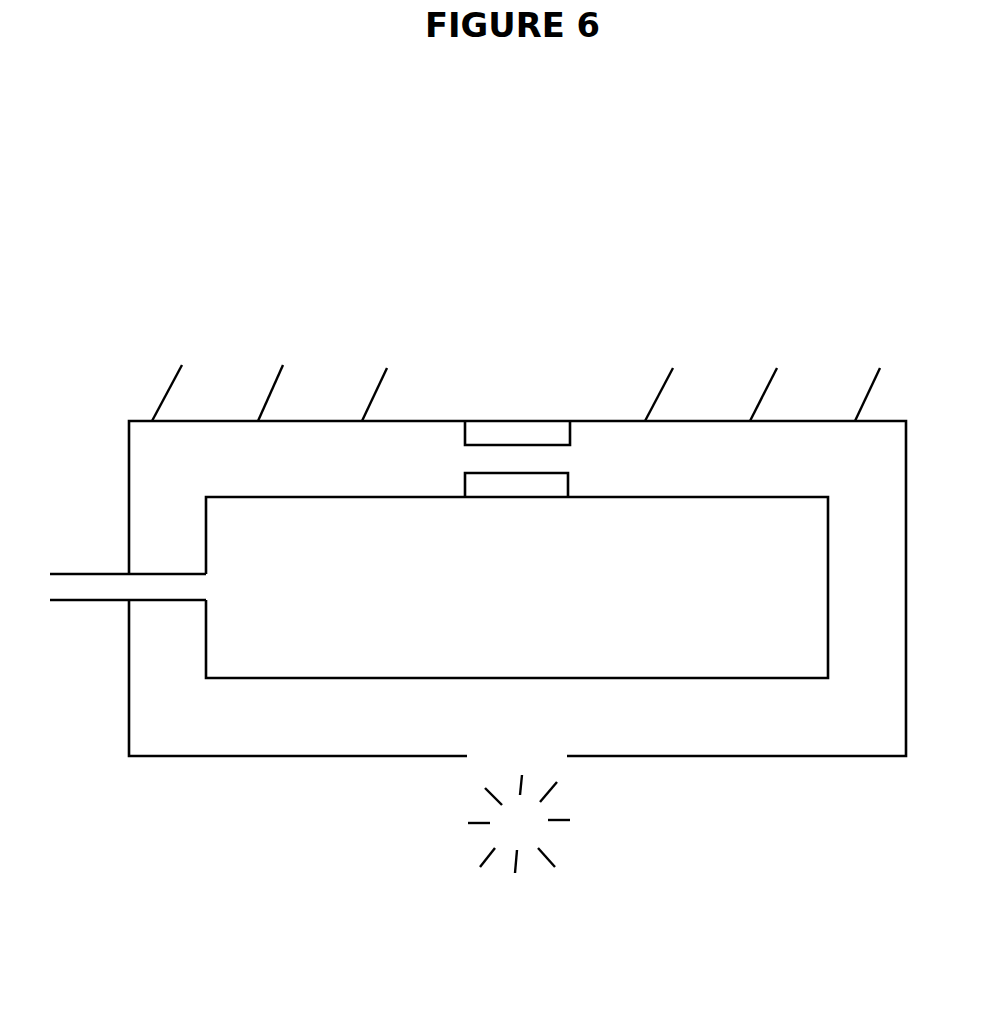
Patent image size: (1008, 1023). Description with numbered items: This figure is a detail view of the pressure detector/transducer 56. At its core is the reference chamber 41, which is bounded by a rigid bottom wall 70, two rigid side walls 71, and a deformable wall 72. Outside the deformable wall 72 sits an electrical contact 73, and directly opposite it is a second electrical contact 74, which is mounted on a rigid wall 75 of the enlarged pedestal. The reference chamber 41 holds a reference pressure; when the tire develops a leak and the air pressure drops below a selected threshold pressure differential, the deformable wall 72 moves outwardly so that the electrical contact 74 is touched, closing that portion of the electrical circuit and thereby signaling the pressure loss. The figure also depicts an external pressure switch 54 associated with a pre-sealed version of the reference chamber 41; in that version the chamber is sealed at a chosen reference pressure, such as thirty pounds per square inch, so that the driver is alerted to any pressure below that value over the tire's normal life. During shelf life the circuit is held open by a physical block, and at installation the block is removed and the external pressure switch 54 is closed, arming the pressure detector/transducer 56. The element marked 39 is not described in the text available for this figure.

The pressure detector/transducer 56 is at (720, 188).
The rigid bottom wall 70 is at (635, 678).
The rigid side walls 71 is at (206, 538).
The deformable wall 72 is at (293, 497).
The electrical contact 73 is at (517, 487).
The electrical contact 74 is at (518, 430).
The rigid wall 75 is at (223, 421).
The external pressure switch 54 is at (585, 462).
The light source 39 is at (519, 824).
The reference chamber 41 is at (295, 713).